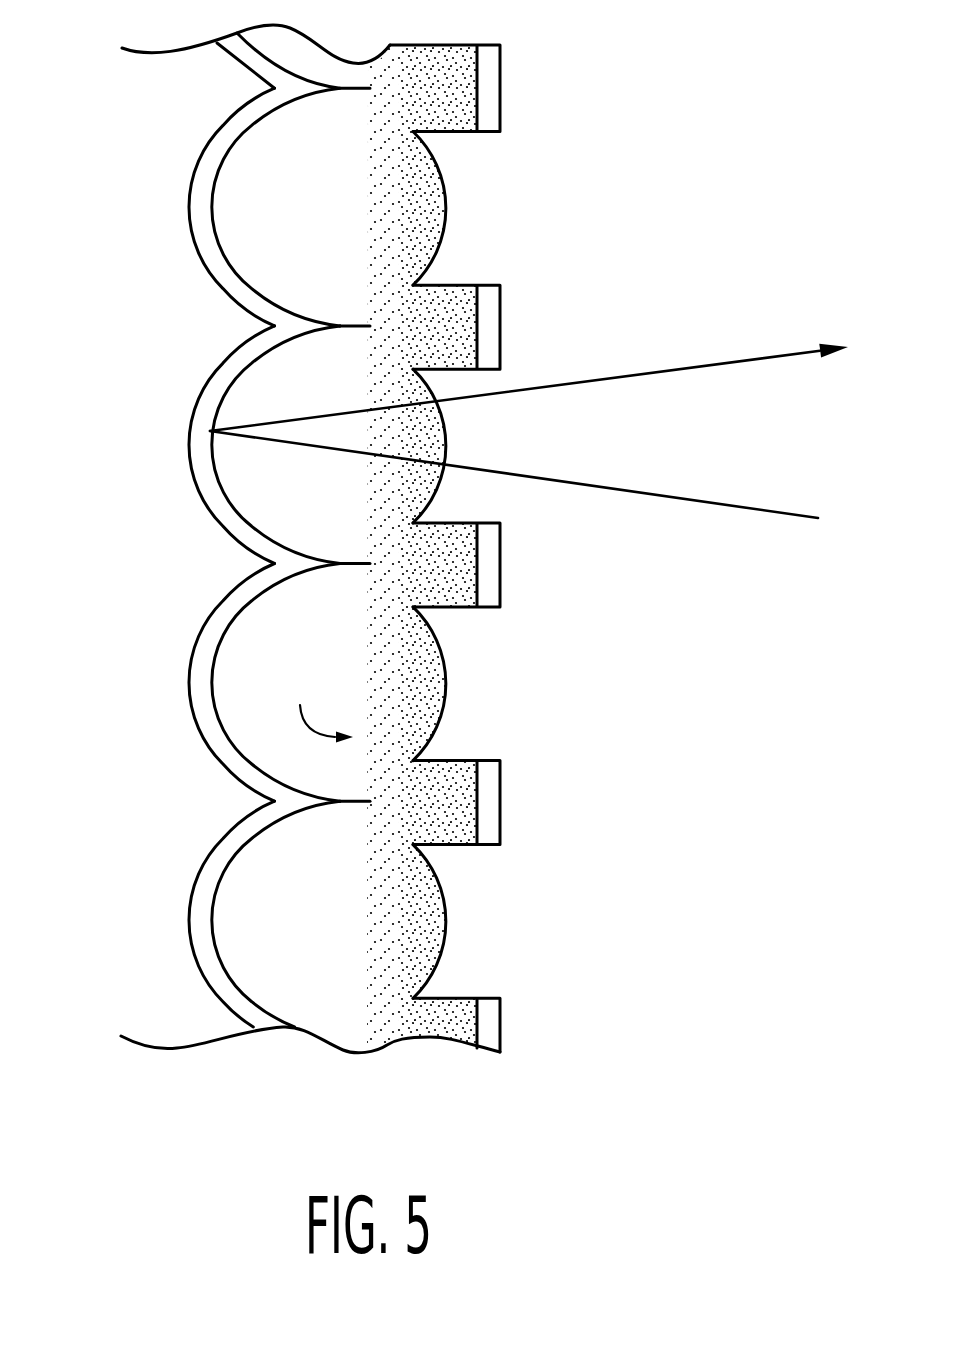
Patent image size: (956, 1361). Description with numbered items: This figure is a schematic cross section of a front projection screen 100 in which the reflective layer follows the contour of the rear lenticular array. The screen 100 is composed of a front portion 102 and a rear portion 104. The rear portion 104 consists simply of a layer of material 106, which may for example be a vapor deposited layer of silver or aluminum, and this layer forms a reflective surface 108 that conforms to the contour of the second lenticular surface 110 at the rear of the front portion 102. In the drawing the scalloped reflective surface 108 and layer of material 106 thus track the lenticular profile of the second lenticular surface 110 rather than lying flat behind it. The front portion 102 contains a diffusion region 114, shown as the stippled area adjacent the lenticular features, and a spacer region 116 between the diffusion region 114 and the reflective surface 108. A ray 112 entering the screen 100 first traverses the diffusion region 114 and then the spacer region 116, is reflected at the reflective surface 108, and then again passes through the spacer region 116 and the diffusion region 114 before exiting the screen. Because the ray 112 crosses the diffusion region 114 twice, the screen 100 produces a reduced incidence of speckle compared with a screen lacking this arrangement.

The screen 100 is at (80, 580).
The front portion 102 is at (423, 1060).
The rear portion 104 is at (190, 900).
The layer of material 106 is at (220, 855).
The reflective surface 108 is at (268, 820).
The second lenticular surface 110 is at (210, 668).
The ray 112 is at (795, 515).
The diffusion region 114 is at (420, 662).
The spacer region 116 is at (340, 922).